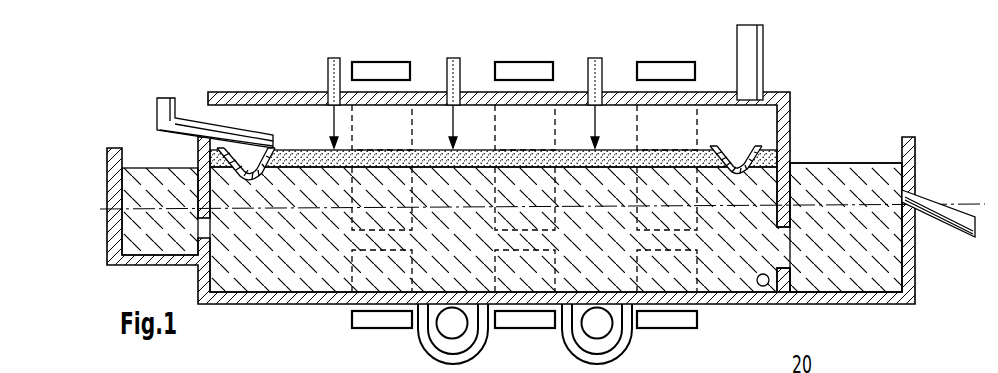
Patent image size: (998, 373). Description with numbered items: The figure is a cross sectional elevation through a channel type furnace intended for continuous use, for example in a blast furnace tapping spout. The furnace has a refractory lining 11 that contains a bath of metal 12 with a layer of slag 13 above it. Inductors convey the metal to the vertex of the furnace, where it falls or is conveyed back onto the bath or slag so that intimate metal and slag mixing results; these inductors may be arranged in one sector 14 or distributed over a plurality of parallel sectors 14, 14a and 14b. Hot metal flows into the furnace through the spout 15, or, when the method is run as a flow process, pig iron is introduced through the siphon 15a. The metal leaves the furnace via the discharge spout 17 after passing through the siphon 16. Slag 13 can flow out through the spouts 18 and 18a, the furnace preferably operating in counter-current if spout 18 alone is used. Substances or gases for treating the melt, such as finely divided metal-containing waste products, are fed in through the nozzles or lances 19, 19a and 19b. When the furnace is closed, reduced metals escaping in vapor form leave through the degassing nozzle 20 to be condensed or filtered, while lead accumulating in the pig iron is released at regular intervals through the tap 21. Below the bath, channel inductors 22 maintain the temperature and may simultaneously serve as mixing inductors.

The refractory lining 11 is at (790, 103).
The metal 12 is at (292, 268).
The slag 13 is at (782, 152).
The sector 14 is at (527, 63).
The sector 14a is at (384, 63).
The sector 14b is at (668, 63).
The spout 15 is at (168, 98).
The siphon 15a is at (146, 162).
The siphon 16 is at (885, 258).
The spout 17 is at (936, 202).
The spout 18 is at (275, 144).
The spout 18a is at (735, 132).
The nozzle 19 is at (586, 60).
The nozzle 19a is at (329, 60).
The nozzle 19b is at (444, 66).
The degassing nozzle 20 is at (752, 50).
The tap 21 is at (763, 287).
The channel inductor 22 is at (582, 342).